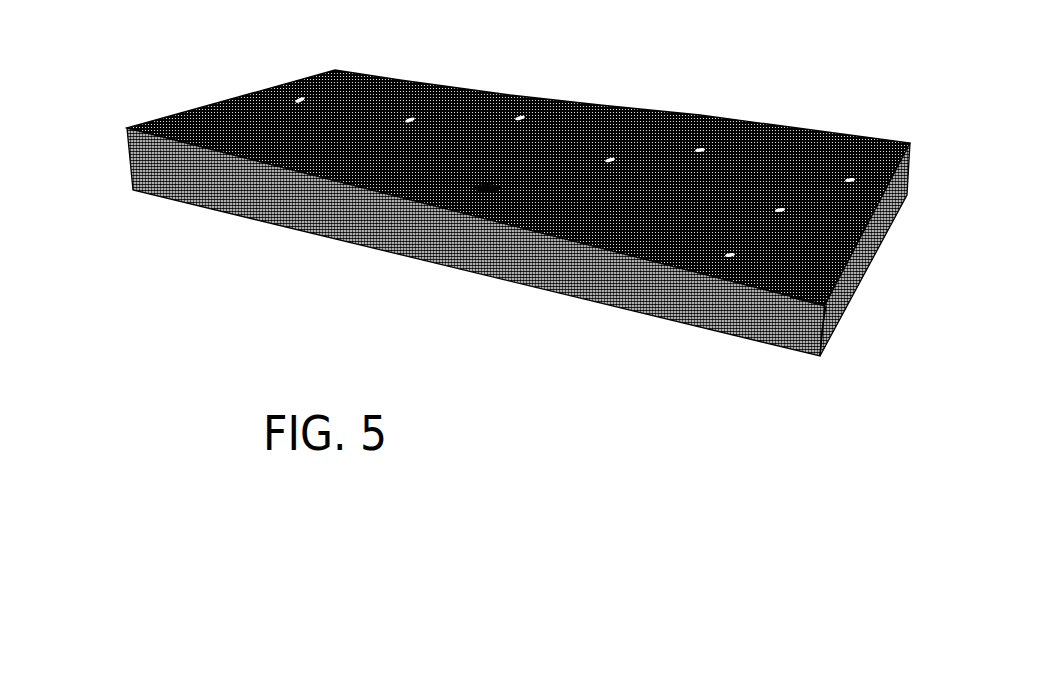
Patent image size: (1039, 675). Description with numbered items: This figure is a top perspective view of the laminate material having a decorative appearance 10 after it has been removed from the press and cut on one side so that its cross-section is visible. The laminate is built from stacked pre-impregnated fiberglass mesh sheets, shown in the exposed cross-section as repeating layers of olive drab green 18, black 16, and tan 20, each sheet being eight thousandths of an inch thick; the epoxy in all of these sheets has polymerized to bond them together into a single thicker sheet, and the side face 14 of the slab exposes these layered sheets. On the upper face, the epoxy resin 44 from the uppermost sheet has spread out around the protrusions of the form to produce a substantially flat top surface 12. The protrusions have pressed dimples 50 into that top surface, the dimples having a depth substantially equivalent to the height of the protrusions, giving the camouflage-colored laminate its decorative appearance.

The laminate material having a decorative appearance 10 is at (532, 213).
The top surface 12 is at (402, 87).
The side surface 14 is at (665, 318).
The black pre-impregnated fiberglass mesh sheet 16 is at (827, 310).
The olive drab green pre-impregnated fiberglass mesh sheet 18 is at (825, 306).
The tan pre-impregnated fiberglass mesh sheet 20 is at (828, 316).
The epoxy resin 44 is at (637, 116).
The dimples 50 is at (487, 186).